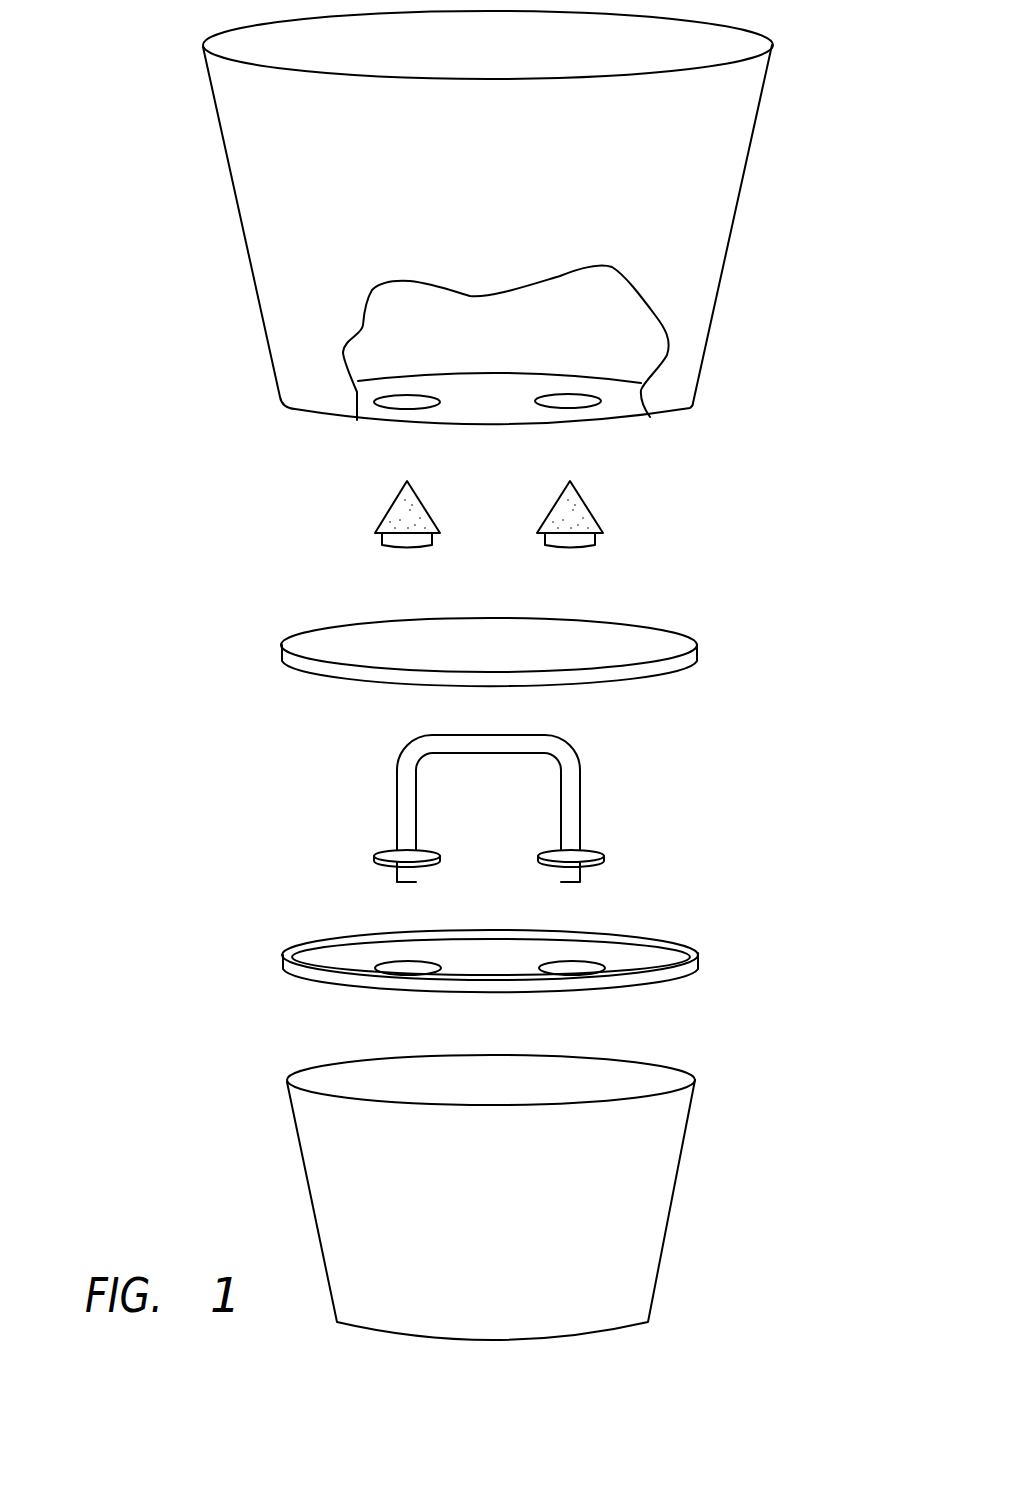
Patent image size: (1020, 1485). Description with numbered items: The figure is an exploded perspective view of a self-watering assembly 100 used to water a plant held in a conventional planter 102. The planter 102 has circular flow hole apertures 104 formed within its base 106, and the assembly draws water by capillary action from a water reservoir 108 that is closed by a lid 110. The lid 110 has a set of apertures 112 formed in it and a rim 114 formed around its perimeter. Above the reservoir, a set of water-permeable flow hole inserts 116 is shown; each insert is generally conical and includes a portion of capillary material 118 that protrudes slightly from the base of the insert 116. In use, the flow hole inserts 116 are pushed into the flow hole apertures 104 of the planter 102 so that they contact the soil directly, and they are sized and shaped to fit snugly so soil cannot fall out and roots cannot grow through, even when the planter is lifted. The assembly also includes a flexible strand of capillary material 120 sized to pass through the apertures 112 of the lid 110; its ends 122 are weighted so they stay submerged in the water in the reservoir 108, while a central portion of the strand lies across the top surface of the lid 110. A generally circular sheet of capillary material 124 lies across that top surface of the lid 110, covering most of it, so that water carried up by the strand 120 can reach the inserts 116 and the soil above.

The self-watering assembly 100 is at (756, 1196).
The planter 102 is at (714, 220).
The flow hole apertures 104 is at (404, 403).
The base 106 is at (607, 410).
The water reservoir 108 is at (632, 1303).
The lid 110 is at (714, 958).
The apertures 112 is at (408, 966).
The rim 114 is at (287, 950).
The flow hole inserts 116 is at (388, 521).
The capillary material 118 is at (391, 548).
The flexible strand of capillary material 120 is at (570, 797).
The ends 122 is at (372, 878).
The sheet of capillary material 124 is at (322, 680).